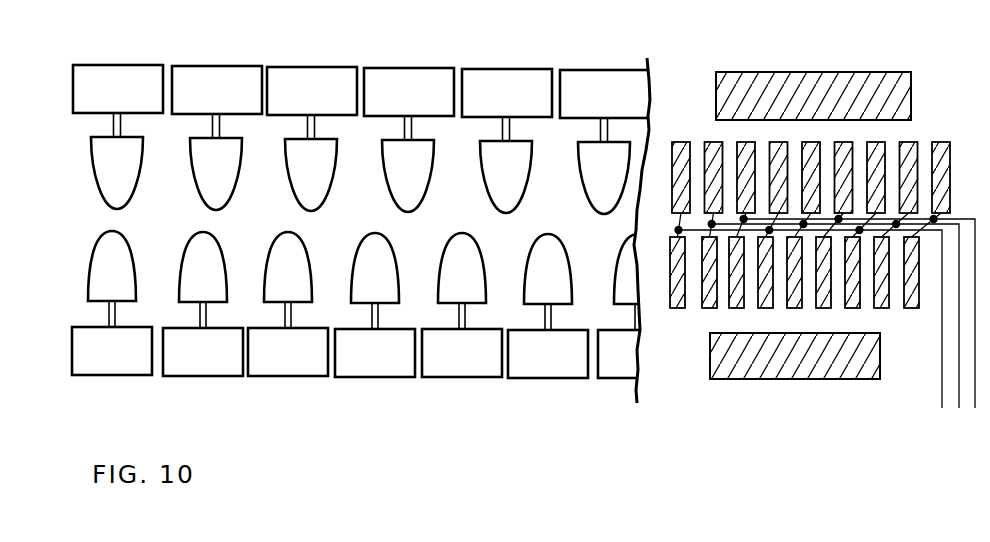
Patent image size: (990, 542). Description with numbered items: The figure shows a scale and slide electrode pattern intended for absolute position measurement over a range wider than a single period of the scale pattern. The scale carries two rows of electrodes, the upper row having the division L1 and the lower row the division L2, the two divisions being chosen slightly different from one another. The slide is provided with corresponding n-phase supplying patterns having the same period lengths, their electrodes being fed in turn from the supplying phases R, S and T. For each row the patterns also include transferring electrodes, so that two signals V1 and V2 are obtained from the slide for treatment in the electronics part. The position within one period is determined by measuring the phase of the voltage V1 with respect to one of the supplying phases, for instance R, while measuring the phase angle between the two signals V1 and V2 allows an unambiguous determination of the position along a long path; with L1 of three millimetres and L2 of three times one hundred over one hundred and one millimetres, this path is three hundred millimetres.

The division of first electrode row L1 is at (216, 23).
The division of second electrode row L2 is at (200, 417).
The first output signal V1 is at (911, 95).
The second output signal V2 is at (880, 357).
The supplying phase R is at (938, 410).
The supplying phase S is at (955, 410).
The supplying phase T is at (971, 410).